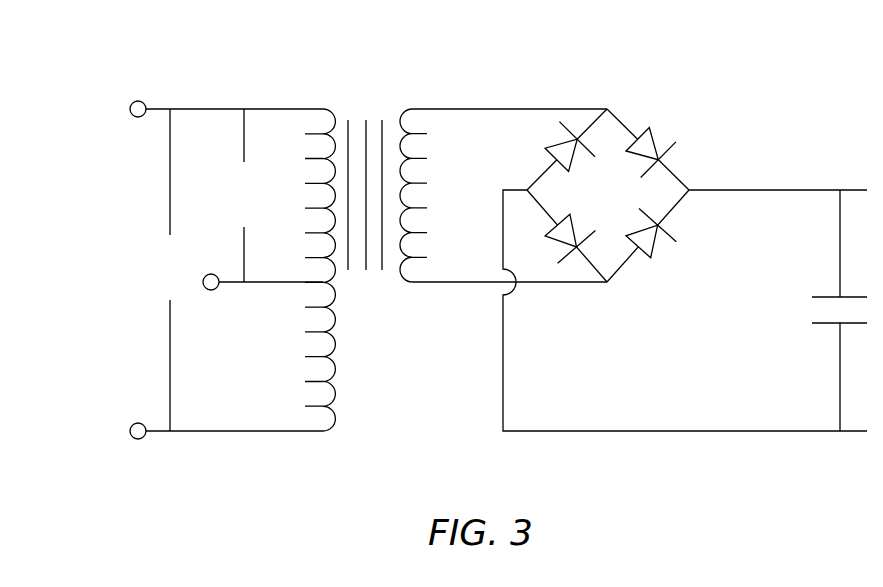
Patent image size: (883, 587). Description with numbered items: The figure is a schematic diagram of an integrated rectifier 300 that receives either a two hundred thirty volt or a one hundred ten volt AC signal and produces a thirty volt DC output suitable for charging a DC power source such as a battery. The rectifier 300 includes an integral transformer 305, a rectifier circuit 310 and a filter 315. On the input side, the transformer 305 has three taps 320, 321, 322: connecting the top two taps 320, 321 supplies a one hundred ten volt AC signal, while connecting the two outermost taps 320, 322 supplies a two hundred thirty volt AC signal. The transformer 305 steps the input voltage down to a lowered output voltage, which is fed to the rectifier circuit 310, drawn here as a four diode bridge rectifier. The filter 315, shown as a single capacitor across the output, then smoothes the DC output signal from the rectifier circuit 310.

The integrated rectifier 300 is at (766, 69).
The transformer 305 is at (369, 282).
The rectifier circuit 310 is at (618, 263).
The filter 315 is at (826, 296).
The tap 320 is at (134, 102).
The tap 321 is at (216, 289).
The tap 322 is at (143, 438).